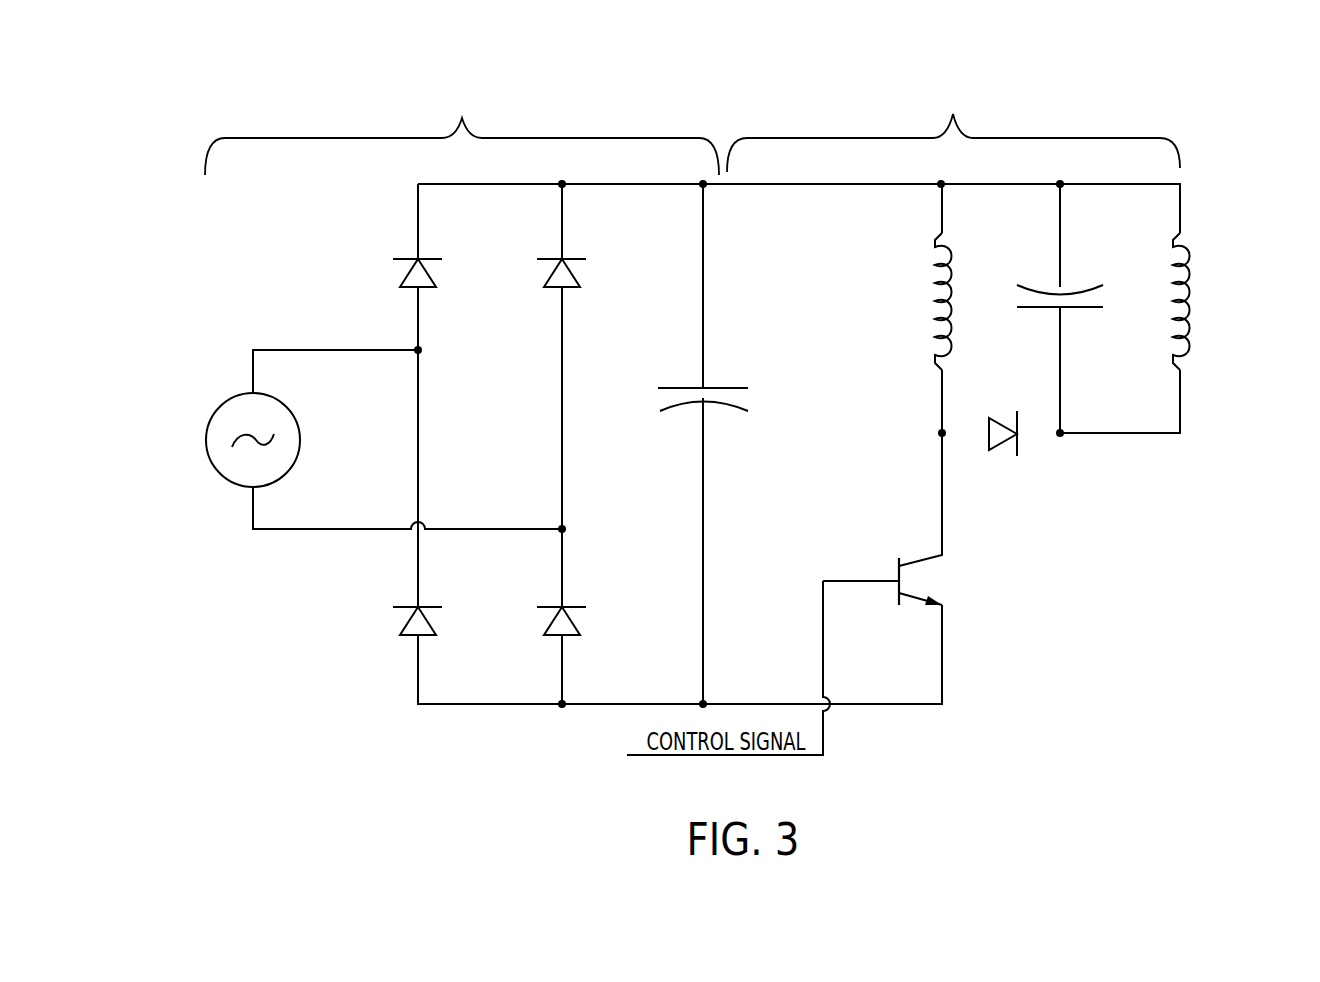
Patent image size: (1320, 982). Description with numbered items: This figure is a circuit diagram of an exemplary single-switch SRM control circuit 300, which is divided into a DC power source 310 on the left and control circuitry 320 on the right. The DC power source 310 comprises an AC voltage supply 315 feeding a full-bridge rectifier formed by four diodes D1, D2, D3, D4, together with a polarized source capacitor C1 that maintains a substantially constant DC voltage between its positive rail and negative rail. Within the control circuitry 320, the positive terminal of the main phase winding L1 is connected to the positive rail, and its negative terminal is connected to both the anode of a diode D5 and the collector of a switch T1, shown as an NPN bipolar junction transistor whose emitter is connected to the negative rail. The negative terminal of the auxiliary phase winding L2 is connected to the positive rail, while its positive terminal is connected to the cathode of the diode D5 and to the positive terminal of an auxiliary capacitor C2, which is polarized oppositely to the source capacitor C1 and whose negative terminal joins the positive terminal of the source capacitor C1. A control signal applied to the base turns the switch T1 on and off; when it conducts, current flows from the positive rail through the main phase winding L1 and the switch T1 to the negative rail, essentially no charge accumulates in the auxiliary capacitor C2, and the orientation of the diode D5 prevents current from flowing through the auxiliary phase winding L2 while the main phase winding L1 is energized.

The single-switch SRM control circuit 300 is at (1226, 121).
The DC power source 310 is at (462, 118).
The AC voltage supply 315 is at (207, 442).
The control circuitry 320 is at (953, 114).
The diode D1 is at (402, 274).
The diode D2 is at (402, 621).
The diode D3 is at (546, 274).
The diode D4 is at (546, 621).
The diode D5 is at (1003, 417).
The source capacitor C1 is at (684, 396).
The auxiliary capacitor C2 is at (1040, 301).
The main phase winding L1 is at (916, 293).
The auxiliary phase winding L2 is at (1154, 301).
The switch T1 is at (897, 581).